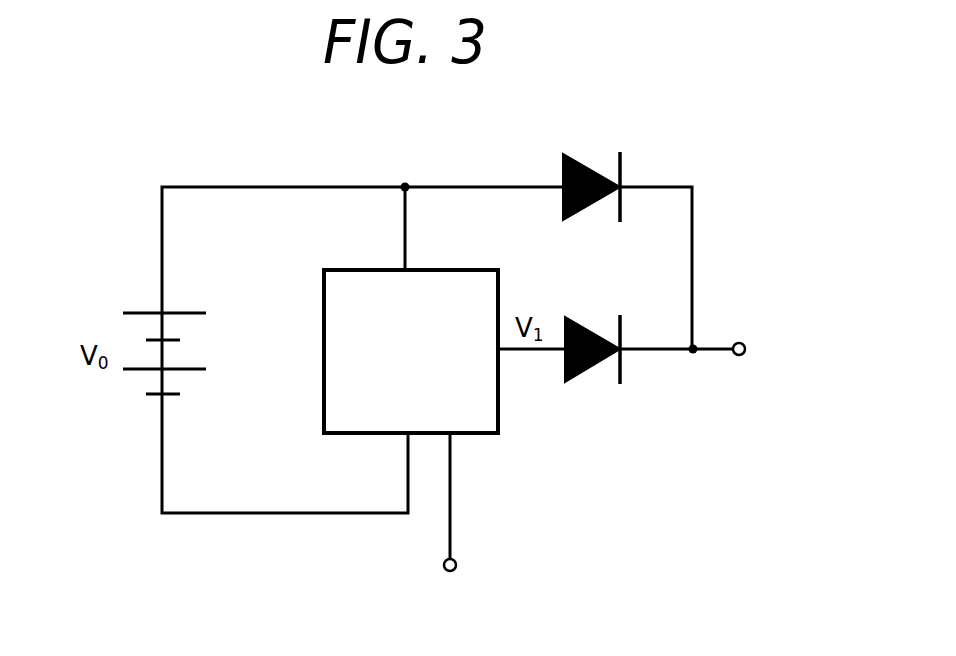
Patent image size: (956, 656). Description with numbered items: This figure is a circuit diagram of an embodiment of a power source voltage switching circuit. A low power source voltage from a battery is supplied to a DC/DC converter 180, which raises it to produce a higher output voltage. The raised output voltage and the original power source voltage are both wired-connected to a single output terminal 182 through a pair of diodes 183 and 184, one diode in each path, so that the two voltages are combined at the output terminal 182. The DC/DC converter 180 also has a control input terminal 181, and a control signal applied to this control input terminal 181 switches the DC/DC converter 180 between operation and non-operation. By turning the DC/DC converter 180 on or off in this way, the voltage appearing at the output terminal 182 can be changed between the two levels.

The DC/DC converter 180 is at (485, 434).
The control input terminal 181 is at (454, 571).
The output terminal 182 is at (744, 344).
The diode 183 is at (593, 163).
The diode 184 is at (596, 366).